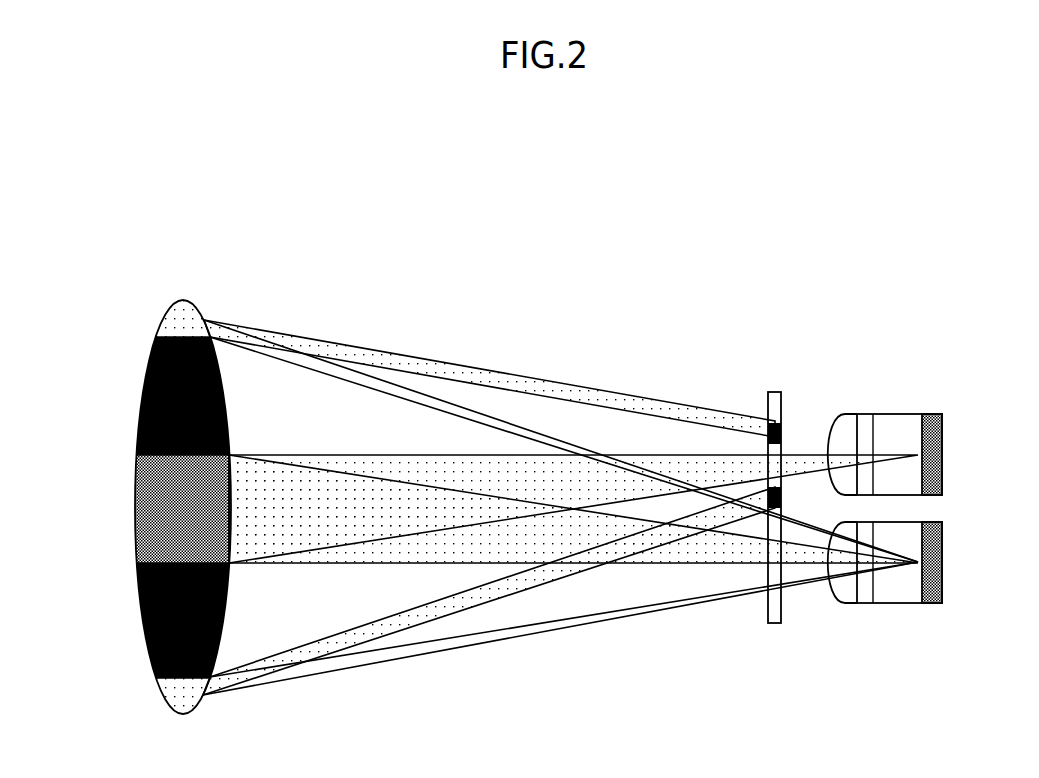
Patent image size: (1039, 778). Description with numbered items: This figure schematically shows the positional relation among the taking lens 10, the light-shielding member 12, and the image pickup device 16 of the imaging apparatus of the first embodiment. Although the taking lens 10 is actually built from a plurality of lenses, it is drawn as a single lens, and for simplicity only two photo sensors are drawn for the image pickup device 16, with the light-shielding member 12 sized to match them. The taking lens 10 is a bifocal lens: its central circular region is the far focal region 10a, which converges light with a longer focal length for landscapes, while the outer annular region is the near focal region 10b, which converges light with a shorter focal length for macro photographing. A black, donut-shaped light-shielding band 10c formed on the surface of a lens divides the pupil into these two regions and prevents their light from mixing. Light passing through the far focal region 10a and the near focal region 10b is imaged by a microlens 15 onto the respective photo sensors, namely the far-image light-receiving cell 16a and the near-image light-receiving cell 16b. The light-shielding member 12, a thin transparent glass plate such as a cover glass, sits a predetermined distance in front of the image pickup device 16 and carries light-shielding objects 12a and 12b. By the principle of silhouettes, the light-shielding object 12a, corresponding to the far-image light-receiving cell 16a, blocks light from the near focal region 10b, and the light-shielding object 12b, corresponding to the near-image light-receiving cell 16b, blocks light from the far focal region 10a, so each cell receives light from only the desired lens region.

The taking lens 10 is at (156, 485).
The far focal region 10a is at (137, 509).
The near focal region 10b is at (164, 320).
The light-shielding band 10c is at (140, 403).
The light-shielding member 12 is at (773, 388).
The light-shielding object 12a is at (781, 436).
The light-shielding object 12b is at (782, 500).
The microlens 15 is at (838, 427).
The image pickup device 16 is at (932, 472).
The far-image light-receiving cell 16a is at (942, 456).
The near-image light-receiving cell 16b is at (942, 562).